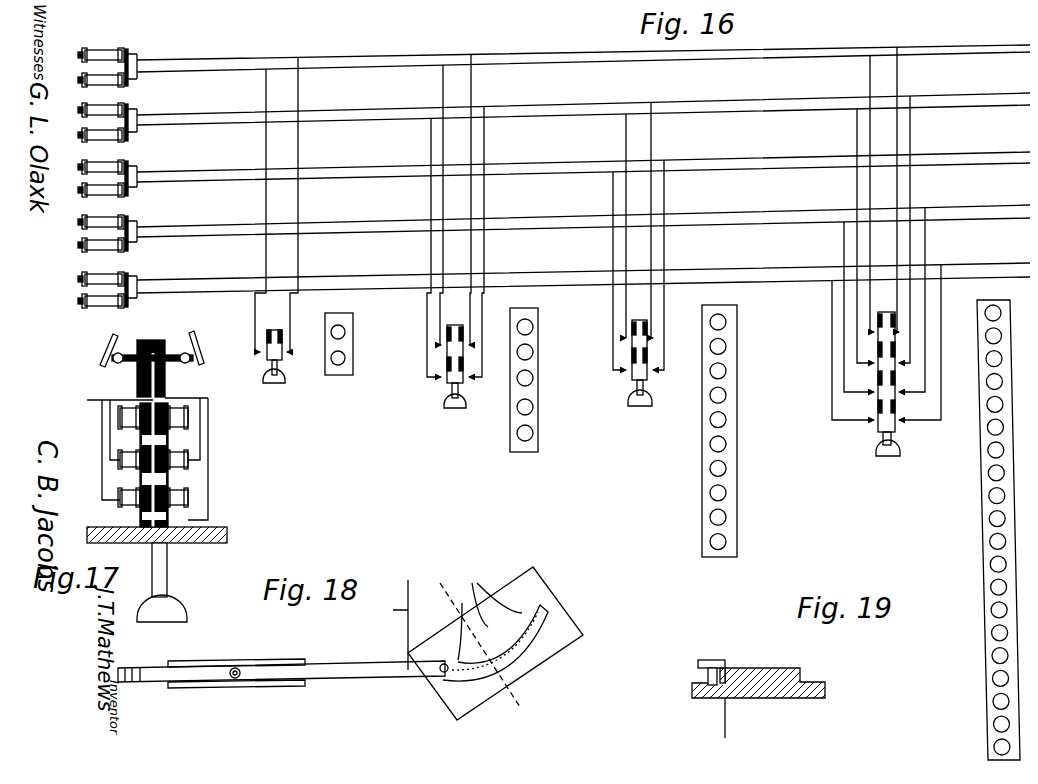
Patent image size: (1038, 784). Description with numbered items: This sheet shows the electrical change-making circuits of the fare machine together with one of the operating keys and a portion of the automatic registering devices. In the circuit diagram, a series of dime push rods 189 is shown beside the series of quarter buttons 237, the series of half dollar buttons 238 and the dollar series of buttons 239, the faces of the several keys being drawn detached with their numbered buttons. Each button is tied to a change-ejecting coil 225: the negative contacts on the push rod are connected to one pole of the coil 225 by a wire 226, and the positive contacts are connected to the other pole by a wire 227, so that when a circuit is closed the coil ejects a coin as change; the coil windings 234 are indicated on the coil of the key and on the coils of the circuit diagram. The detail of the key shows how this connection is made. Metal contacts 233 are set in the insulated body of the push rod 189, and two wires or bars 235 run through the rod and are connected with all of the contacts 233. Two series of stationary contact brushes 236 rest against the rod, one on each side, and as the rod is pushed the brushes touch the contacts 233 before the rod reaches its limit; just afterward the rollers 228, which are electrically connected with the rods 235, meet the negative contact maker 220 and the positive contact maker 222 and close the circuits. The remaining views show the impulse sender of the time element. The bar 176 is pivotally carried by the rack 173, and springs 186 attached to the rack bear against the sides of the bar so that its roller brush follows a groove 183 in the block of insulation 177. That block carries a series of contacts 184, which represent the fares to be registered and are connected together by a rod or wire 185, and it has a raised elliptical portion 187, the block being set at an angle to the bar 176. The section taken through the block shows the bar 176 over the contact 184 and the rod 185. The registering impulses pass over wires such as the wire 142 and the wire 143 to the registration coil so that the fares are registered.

In FIG. 16, the coil 225 is at (78, 80).
In FIG. 16, the wire 226 is at (152, 115).
In FIG. 17, the wire 226 is at (192, 492).
In FIG. 16, the wire 227 is at (160, 58).
In FIG. 17, the wire 227 is at (112, 497).
In FIG. 16, the push rod 189 is at (316, 354).
In FIG. 16, the solenoid coil 234 is at (447, 331).
In FIG. 17, the solenoid coil 234 is at (180, 474).
In FIG. 16, the series of quarter buttons 237 is at (452, 411).
In FIG. 16, the series of half dollar buttons 238 is at (640, 409).
In FIG. 16, the dollar series of buttons 239 is at (888, 458).
In FIG. 17, the contact 222 is at (108, 345).
In FIG. 17, the contact 220 is at (195, 341).
In FIG. 17, the rollers 228 is at (118, 364).
In FIG. 17, the wires or bars 235 is at (214, 390).
In FIG. 17, the metal contacts 233 is at (158, 439).
In FIG. 17, the contact brushes 236 is at (118, 465).
In FIG. 18, the impulse sender 176 is at (395, 678).
In FIG. 19, the impulse sender 176 is at (714, 660).
In FIG. 18, the rack 173 is at (134, 690).
In FIG. 18, the springs 186 is at (245, 660).
In FIG. 18, the wire 143 is at (381, 625).
In FIG. 18, the block of insulation 177 is at (537, 661).
In FIG. 19, the block of insulation 177 is at (788, 698).
In FIG. 18, the groove 183 is at (547, 613).
In FIG. 19, the groove 183 is at (859, 667).
In FIG. 18, the contacts 184 is at (490, 609).
In FIG. 19, the contacts 184 is at (726, 668).
In FIG. 19, the raised elliptical portion 187 is at (803, 675).
In FIG. 19, the rod or wire 185 is at (722, 699).
In FIG. 19, the wire 142 is at (725, 730).